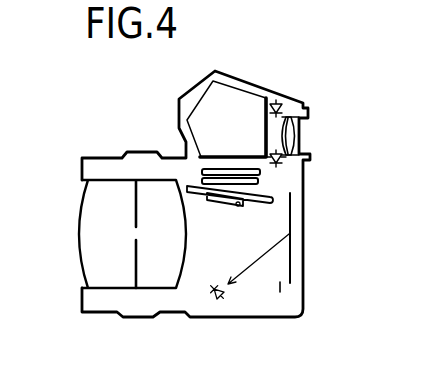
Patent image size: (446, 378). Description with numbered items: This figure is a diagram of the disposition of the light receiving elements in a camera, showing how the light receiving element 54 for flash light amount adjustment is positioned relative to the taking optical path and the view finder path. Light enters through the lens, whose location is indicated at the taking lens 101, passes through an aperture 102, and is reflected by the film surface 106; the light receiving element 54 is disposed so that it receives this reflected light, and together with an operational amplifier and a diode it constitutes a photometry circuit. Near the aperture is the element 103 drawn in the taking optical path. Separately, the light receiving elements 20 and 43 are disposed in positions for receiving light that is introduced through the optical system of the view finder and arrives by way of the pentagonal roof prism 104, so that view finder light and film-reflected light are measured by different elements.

The photographic taking lens 101 is at (80, 230).
The aperture 102 is at (134, 214).
The light measuring element assembly 103 is at (199, 202).
The pentagonal roof prism 104 is at (253, 103).
The light receiving element 20 is at (283, 104).
The light receiving element 43 is at (288, 163).
The film surface 106 is at (289, 221).
The light receiving element 54 is at (217, 300).